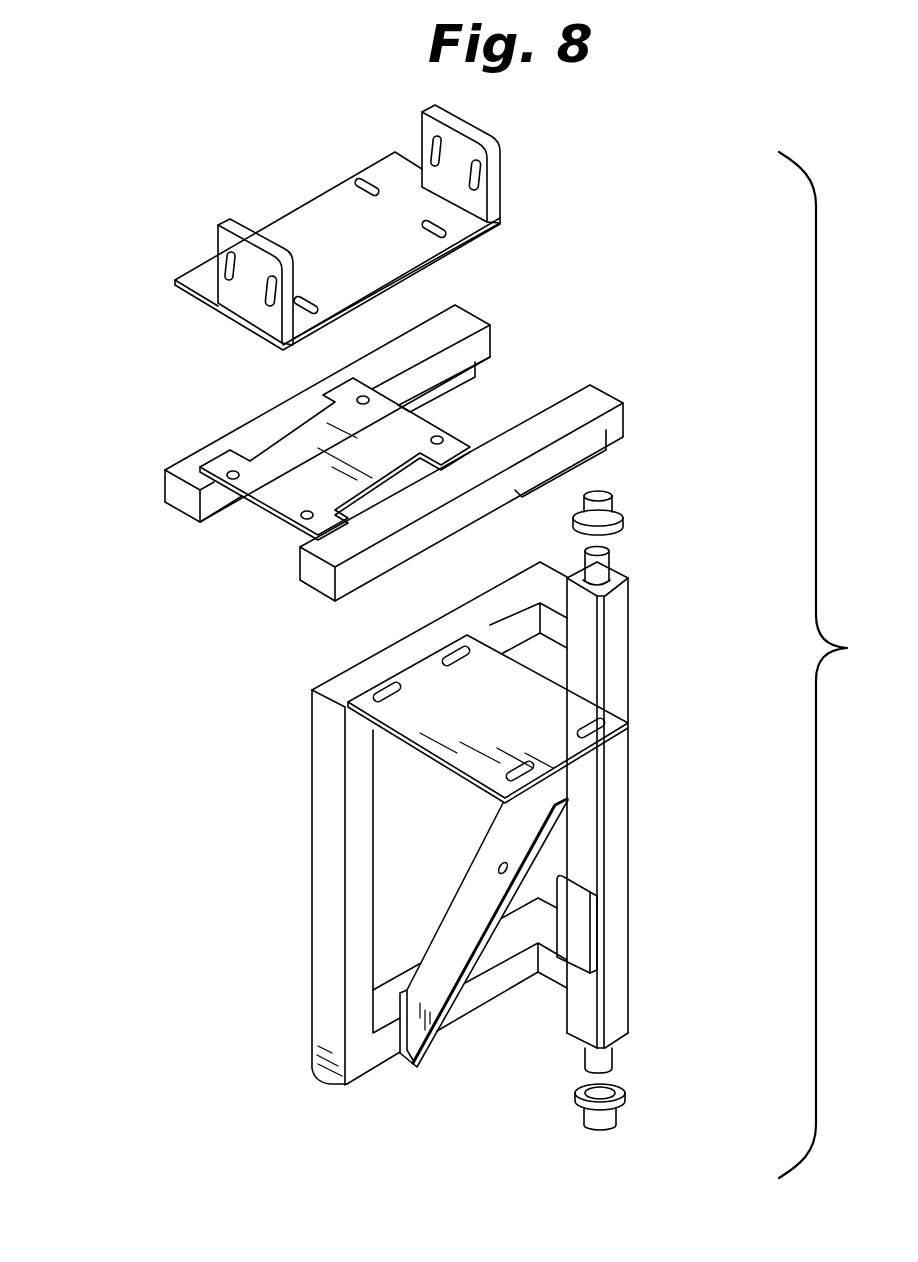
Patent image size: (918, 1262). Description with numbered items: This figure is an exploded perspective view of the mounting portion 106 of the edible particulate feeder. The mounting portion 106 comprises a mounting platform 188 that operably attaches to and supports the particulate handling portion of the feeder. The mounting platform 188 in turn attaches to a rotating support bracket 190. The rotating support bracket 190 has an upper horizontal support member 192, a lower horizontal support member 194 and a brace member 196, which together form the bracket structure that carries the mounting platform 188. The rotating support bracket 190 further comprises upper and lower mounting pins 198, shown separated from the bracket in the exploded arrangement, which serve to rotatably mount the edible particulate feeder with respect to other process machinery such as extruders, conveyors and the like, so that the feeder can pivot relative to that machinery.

The mounting portion 106 is at (214, 167).
The mounting platform 188 is at (492, 177).
The rotating support bracket 190 is at (633, 895).
The upper horizontal support member 192 is at (347, 688).
The lower horizontal support member 194 is at (480, 1003).
The brace member 196 is at (452, 945).
The upper and lower mounting pins 198 is at (602, 562).